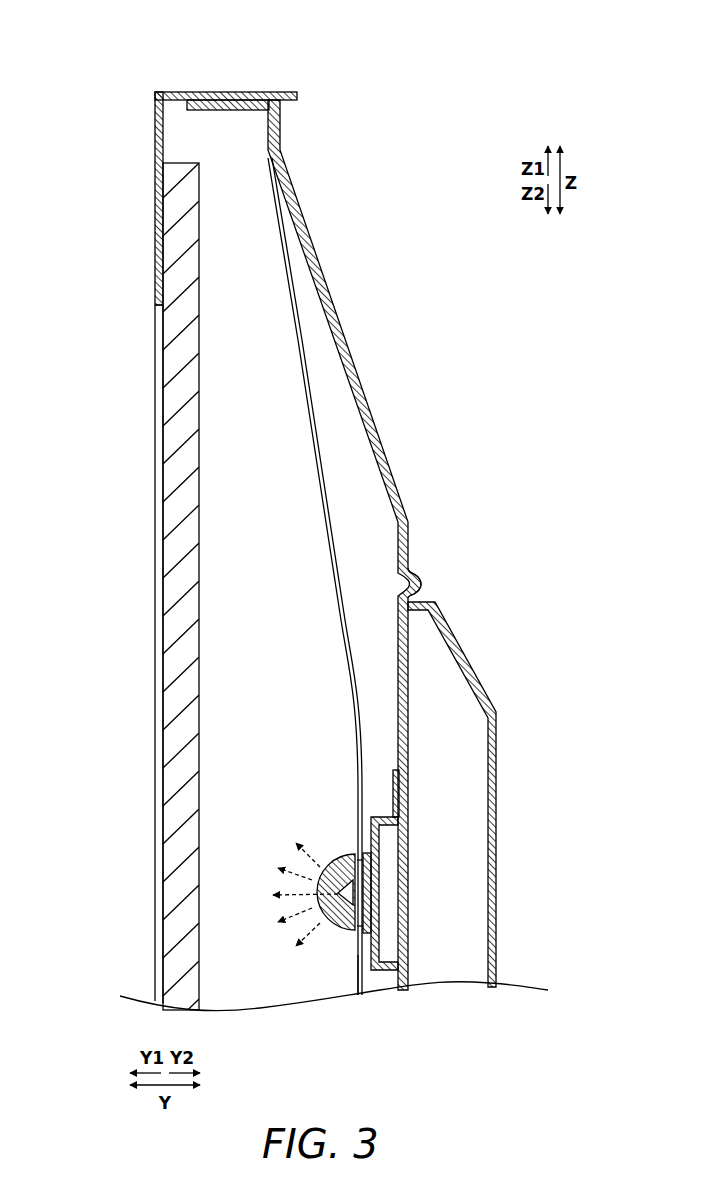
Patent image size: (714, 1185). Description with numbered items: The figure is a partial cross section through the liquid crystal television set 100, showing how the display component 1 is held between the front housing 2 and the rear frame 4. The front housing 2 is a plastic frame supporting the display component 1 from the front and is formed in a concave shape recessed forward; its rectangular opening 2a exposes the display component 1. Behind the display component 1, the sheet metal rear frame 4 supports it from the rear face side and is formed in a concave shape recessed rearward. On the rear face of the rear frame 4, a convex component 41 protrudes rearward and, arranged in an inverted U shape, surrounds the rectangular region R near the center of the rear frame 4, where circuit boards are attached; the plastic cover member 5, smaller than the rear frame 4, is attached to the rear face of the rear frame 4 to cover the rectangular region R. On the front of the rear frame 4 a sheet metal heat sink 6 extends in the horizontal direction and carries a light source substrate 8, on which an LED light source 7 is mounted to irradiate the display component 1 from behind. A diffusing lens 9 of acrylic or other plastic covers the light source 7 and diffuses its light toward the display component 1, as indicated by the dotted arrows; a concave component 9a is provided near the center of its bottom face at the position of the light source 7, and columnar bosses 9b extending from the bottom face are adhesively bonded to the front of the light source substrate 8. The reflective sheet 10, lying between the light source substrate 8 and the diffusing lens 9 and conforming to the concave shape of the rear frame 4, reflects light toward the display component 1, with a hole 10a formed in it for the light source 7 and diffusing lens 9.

The liquid crystal television set 100 is at (367, 52).
The display component 1 is at (173, 397).
The front housing 2 is at (166, 94).
The rectangular opening 2a is at (153, 313).
The rear frame 4 is at (325, 287).
The convex component 41 is at (414, 577).
The cover member 5 is at (468, 667).
The heat sink 6 is at (413, 800).
The light source 7 is at (373, 898).
The light source substrate 8 is at (374, 883).
The diffusing lens 9 is at (336, 933).
The concave component 9a is at (343, 933).
The columnar boss 9b is at (370, 866).
The reflective sheet 10 is at (327, 483).
The hole 10a is at (373, 968).
The rectangular region R is at (421, 634).